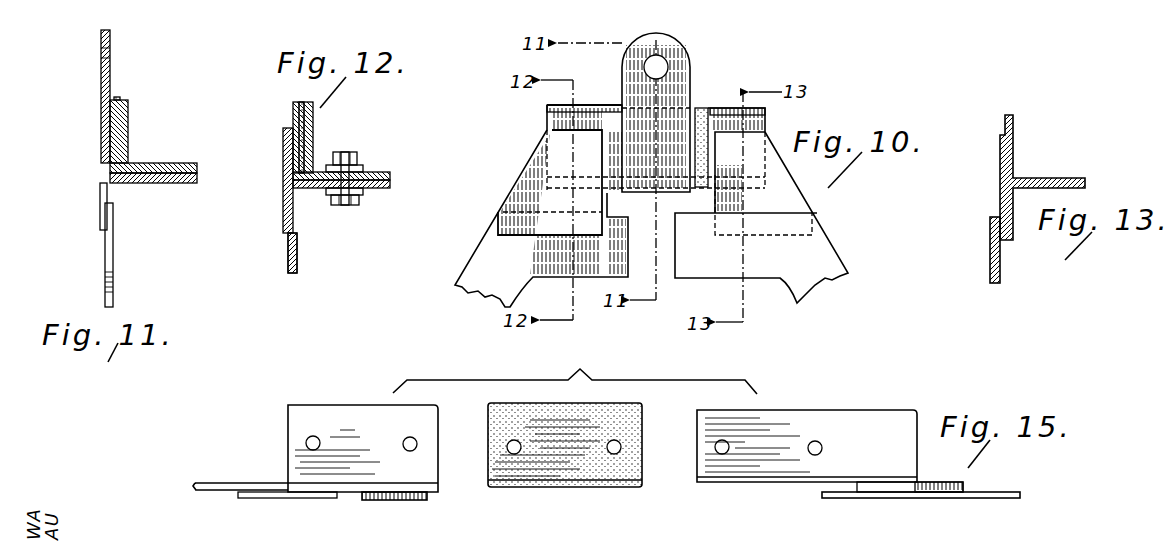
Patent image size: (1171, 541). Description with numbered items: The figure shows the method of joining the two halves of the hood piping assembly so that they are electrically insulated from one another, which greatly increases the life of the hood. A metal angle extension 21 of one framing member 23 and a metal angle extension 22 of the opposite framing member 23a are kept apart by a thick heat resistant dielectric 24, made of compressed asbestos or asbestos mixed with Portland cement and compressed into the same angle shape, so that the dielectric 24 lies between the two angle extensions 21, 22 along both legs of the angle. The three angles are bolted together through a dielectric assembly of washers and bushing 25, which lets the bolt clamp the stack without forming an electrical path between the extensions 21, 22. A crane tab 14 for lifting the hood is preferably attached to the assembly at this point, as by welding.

In FIG. 11, the crane tab 14 is at (101, 44).
In FIG. 10, the crane tab 14 is at (688, 54).
In FIG. 15, the crane tab 14 is at (367, 491).
In FIG. 11, the metal angle extension 21 is at (170, 183).
In FIG. 12, the metal angle extension 21 is at (390, 188).
In FIG. 10, the metal angle extension 21 is at (606, 193).
In FIG. 15, the metal angle extension 21 is at (288, 424).
In FIG. 11, the metal angle extension 22 is at (160, 163).
In FIG. 12, the metal angle extension 22 is at (389, 172).
In FIG. 10, the metal angle extension 22 is at (757, 206).
In FIG. 13, the metal angle extension 22 is at (1086, 182).
In FIG. 15, the metal angle extension 22 is at (882, 418).
In FIG. 11, the framing member 23 is at (113, 272).
In FIG. 12, the framing member 23 is at (297, 240).
In FIG. 10, the framing member 23 is at (466, 269).
In FIG. 15, the framing member 23 is at (238, 483).
In FIG. 10, the framing member 23a is at (830, 237).
In FIG. 13, the framing member 23a is at (996, 283).
In FIG. 15, the framing member 23a is at (1013, 498).
In FIG. 11, the heat resistant dielectric 24 is at (118, 100).
In FIG. 12, the heat resistant dielectric 24 is at (302, 102).
In FIG. 10, the heat resistant dielectric 24 is at (703, 107).
In FIG. 15, the heat resistant dielectric 24 is at (640, 417).
In FIG. 12, the dielectric assembly of washers and bushing 25 is at (340, 152).